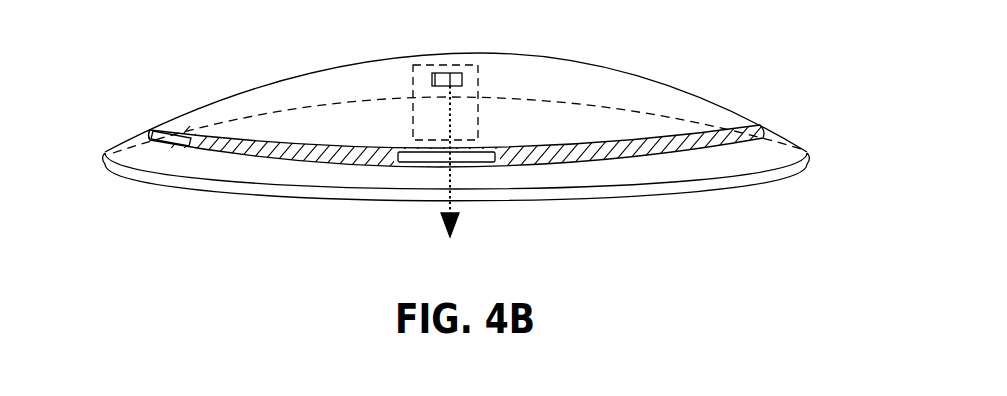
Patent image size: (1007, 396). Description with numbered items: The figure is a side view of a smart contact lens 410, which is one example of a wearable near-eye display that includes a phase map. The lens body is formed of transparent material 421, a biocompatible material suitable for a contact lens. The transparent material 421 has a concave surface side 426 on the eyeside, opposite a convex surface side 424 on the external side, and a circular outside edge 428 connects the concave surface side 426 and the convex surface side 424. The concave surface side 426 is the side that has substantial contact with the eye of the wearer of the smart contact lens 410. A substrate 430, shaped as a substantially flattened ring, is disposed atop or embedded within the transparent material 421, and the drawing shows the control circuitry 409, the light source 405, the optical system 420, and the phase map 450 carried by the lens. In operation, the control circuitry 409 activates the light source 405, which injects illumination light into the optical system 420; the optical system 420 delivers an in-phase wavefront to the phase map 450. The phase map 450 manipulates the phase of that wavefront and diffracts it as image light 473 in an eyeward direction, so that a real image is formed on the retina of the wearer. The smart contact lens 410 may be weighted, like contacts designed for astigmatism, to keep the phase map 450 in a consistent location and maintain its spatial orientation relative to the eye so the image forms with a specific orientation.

The smart contact lens 410 is at (443, 145).
The convex surface side 424 is at (710, 100).
The transparent material 421 is at (198, 184).
The circular outside edge 428 is at (613, 192).
The concave surface side 426 is at (734, 156).
The control circuitry 409 is at (166, 127).
The substrate 430 is at (157, 127).
The light source 405 is at (481, 155).
The phase map 450 is at (462, 79).
The optical system 420 is at (413, 124).
The image light 473 is at (451, 175).